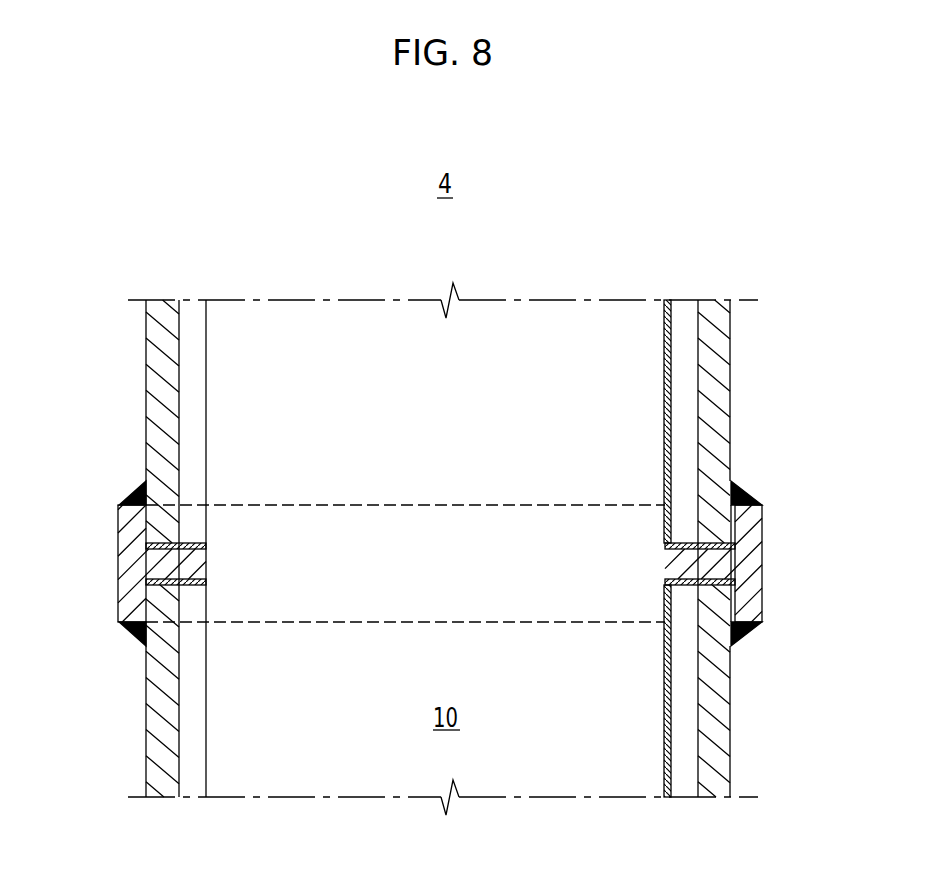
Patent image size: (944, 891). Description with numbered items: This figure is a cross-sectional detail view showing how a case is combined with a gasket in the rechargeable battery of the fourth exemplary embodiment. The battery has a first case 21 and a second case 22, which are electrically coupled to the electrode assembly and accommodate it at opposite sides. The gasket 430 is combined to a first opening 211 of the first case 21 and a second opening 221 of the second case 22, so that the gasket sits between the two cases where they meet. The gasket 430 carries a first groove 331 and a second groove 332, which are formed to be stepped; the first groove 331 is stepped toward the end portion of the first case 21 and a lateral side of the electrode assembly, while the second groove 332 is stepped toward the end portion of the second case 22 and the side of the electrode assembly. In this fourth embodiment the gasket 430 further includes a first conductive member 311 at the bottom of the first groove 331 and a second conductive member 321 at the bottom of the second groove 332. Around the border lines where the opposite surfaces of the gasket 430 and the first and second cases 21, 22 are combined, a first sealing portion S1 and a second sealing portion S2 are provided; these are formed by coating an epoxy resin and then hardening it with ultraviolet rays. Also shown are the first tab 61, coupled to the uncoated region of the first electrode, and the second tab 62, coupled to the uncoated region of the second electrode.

The first case 21 is at (146, 728).
The second case 22 is at (146, 367).
The first opening 211 is at (190, 569).
The second opening 221 is at (186, 559).
The first groove 331 is at (143, 646).
The second groove 332 is at (143, 482).
The gasket 430 is at (118, 560).
The first tab 61 is at (670, 712).
The second tab 62 is at (668, 377).
The first conductive member 311 is at (738, 572).
The second conductive member 321 is at (740, 556).
The first sealing portion S1 is at (745, 639).
The second sealing portion S2 is at (743, 483).